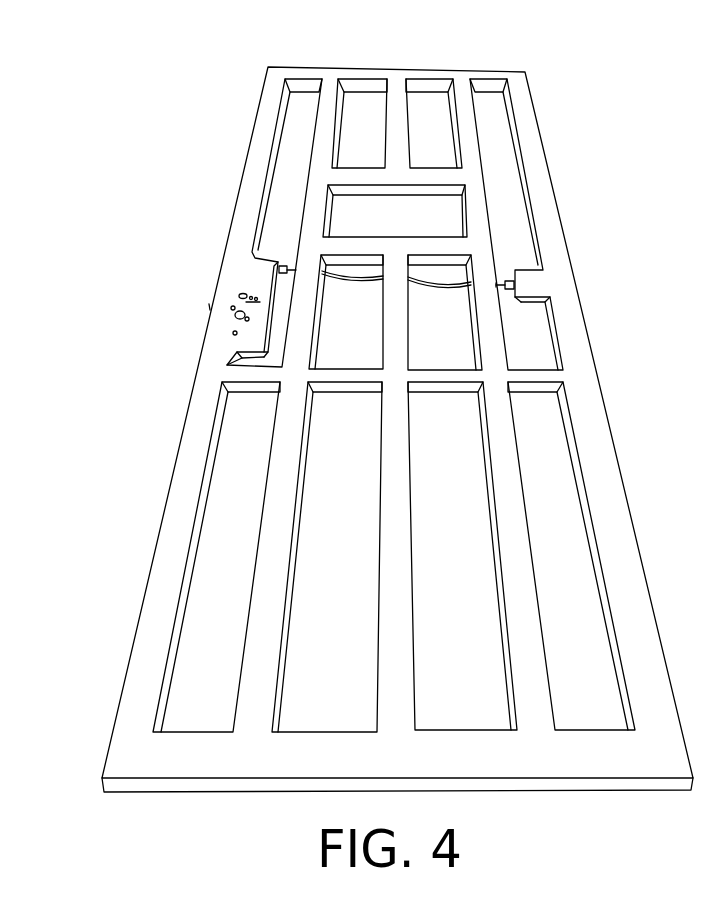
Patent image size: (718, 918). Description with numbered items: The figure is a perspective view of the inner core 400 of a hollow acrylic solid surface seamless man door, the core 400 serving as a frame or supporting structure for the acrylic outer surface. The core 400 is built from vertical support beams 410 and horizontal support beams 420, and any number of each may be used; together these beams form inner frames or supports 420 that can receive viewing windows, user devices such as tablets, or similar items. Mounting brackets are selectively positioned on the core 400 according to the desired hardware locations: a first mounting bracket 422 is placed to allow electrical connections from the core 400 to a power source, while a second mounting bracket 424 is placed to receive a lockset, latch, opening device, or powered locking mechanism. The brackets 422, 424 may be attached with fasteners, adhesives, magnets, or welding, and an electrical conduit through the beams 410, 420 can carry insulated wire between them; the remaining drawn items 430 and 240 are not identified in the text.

The inner core 400 is at (181, 110).
The vertical support beams 410 is at (178, 495).
The horizontal support beams 420 is at (533, 375).
The first mounting bracket 422 is at (533, 281).
The second mounting bracket 424 is at (247, 327).
The cable 430 is at (437, 281).
The bracket 240 is at (492, 201).